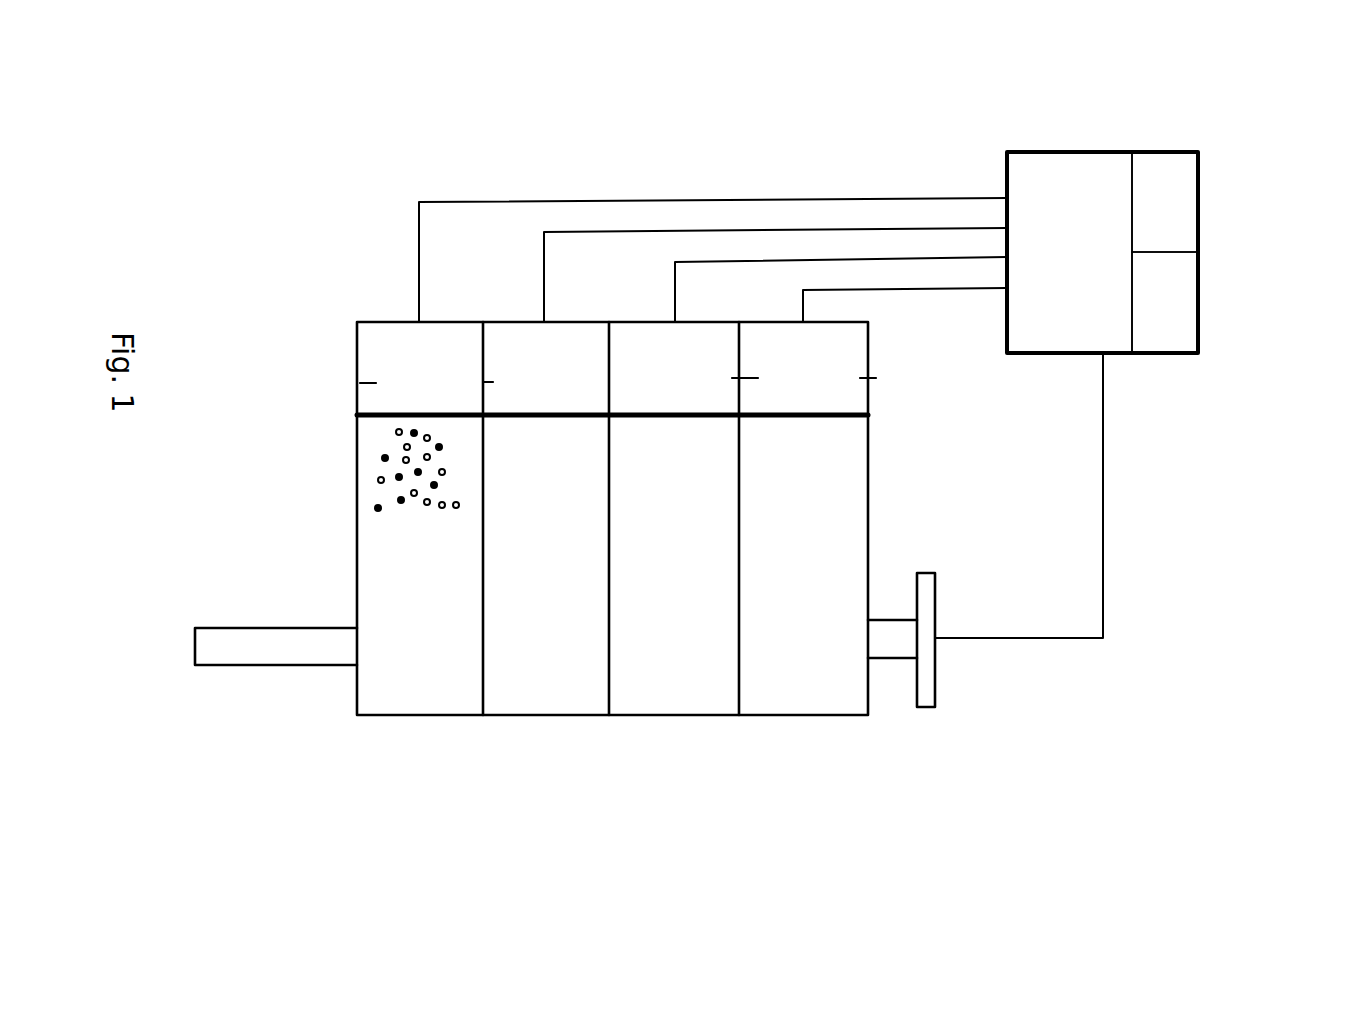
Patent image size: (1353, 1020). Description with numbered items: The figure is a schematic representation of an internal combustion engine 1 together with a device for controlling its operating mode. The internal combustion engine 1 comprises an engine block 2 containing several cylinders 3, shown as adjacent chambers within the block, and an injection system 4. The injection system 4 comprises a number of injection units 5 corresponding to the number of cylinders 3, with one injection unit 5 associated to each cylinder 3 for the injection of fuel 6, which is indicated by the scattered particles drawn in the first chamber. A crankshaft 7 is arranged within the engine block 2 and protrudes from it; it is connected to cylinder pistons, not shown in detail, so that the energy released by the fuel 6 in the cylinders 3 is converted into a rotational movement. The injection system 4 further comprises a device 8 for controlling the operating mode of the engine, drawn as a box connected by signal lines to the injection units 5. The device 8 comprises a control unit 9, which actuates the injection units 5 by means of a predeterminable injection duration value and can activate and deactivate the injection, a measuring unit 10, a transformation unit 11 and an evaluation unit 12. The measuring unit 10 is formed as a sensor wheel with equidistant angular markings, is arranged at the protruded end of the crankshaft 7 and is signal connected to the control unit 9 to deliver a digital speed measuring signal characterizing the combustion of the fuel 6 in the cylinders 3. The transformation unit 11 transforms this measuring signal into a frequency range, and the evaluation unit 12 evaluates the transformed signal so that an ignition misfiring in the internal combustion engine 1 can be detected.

The internal combustion engine 1 is at (330, 228).
The engine block 2 is at (354, 456).
The cylinders 3 is at (505, 703).
The injection system 4 is at (355, 338).
The injection units 5 is at (483, 382).
The fuel 6 is at (380, 480).
The crankshaft 7 is at (285, 655).
The device for controlling the operating mode 8 is at (1058, 146).
The control unit 9 is at (1068, 337).
The measuring unit 10 is at (925, 698).
The transformation unit 11 is at (1168, 338).
The evaluation unit 12 is at (1190, 207).